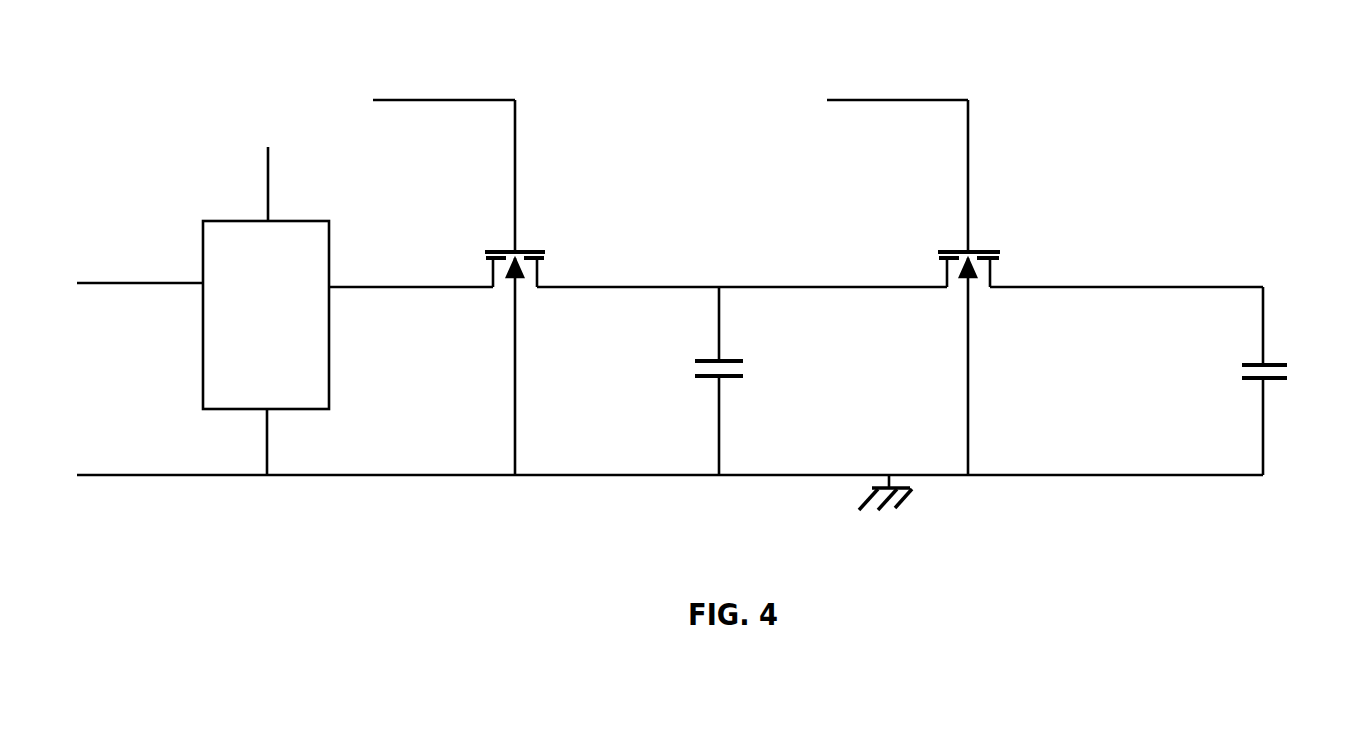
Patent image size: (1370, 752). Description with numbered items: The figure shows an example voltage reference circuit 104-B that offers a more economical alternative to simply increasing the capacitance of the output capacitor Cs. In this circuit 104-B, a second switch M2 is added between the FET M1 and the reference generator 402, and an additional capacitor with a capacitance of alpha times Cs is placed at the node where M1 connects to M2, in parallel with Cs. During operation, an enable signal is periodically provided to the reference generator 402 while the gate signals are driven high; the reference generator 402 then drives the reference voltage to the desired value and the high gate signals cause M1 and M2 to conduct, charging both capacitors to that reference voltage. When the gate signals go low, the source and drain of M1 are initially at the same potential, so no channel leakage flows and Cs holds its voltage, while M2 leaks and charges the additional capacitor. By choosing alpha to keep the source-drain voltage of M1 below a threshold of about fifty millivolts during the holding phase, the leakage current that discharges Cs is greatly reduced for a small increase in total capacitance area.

The circuit 104-B is at (200, 66).
The reference generator 402 is at (266, 315).
The FET M1 is at (1005, 244).
The second switch M2 is at (544, 244).
The output capacitor Cs is at (1304, 381).